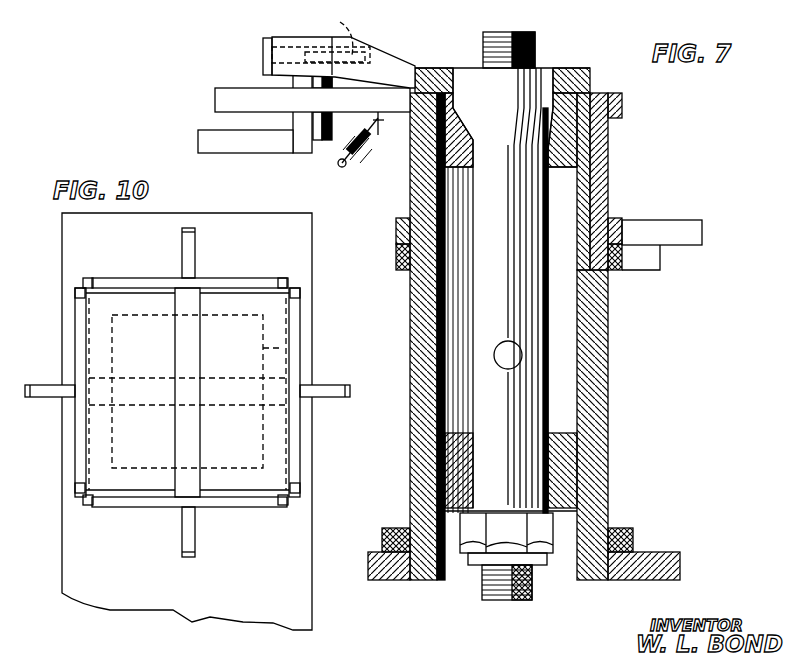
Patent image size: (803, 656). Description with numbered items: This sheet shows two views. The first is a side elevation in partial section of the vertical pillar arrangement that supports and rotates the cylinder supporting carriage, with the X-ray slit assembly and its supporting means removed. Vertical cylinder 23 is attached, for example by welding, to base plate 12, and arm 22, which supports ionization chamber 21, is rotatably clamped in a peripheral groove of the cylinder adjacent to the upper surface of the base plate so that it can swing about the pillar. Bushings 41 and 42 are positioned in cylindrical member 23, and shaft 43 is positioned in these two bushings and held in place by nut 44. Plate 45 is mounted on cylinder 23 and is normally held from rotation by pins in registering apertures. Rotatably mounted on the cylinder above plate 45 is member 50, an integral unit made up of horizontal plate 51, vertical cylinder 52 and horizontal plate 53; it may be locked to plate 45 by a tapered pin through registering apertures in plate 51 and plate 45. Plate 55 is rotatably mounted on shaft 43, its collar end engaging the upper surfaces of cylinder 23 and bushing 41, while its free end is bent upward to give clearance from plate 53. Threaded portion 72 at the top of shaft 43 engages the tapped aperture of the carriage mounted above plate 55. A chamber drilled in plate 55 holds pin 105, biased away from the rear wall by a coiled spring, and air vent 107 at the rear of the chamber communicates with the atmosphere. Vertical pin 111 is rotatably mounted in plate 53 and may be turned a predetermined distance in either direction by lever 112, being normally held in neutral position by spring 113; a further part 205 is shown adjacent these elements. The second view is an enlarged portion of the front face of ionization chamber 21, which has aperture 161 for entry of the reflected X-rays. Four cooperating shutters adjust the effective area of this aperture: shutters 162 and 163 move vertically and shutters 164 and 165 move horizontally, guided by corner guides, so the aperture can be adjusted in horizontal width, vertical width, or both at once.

In FIG. 7, the base plate 12 is at (672, 552).
In FIG. 10, the ionization chamber 21 is at (312, 522).
In FIG. 7, the arm 22 is at (633, 538).
In FIG. 7, the vertical cylinder 23 is at (608, 394).
In FIG. 7, the bushing 41 is at (596, 143).
In FIG. 7, the bushing 42 is at (577, 467).
In FIG. 7, the shaft 43 is at (548, 312).
In FIG. 7, the nut 44 is at (553, 555).
In FIG. 7, the plate 45 is at (645, 270).
In FIG. 7, the member 50 is at (410, 205).
In FIG. 7, the horizontal plate 51 is at (700, 234).
In FIG. 7, the vertical cylinder 52 is at (606, 170).
In FIG. 7, the horizontal plate 53 is at (215, 97).
In FIG. 7, the plate 55 is at (392, 62).
In FIG. 7, the threaded portion 72 is at (536, 40).
In FIG. 7, the pin 105 is at (263, 52).
In FIG. 7, the air vent 107 is at (332, 33).
In FIG. 7, the vertical pin 111 is at (293, 120).
In FIG. 7, the lever 112 is at (205, 153).
In FIG. 7, the spring 113 is at (362, 150).
In FIG. 7, the contact strip 205 is at (310, 158).
In FIG. 10, the aperture 161 is at (290, 340).
In FIG. 10, the shutter 162 is at (195, 248).
In FIG. 10, the shutter 163 is at (195, 542).
In FIG. 10, the shutter 164 is at (42, 397).
In FIG. 10, the shutter 165 is at (332, 399).